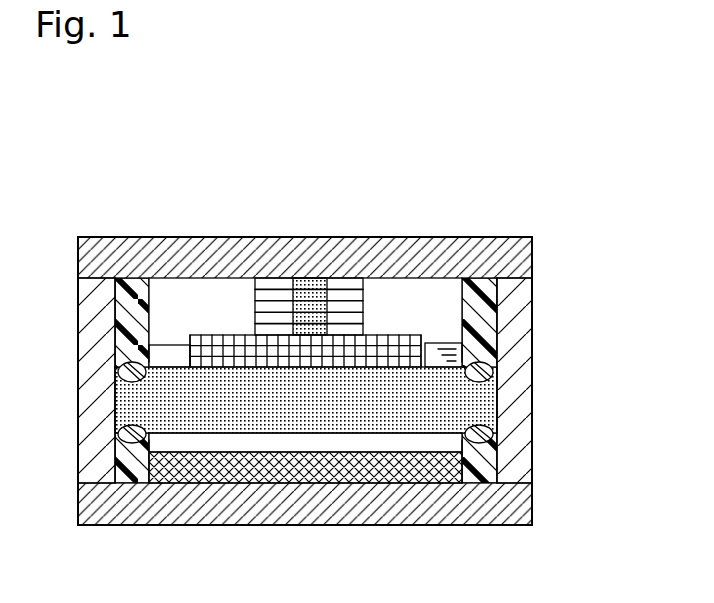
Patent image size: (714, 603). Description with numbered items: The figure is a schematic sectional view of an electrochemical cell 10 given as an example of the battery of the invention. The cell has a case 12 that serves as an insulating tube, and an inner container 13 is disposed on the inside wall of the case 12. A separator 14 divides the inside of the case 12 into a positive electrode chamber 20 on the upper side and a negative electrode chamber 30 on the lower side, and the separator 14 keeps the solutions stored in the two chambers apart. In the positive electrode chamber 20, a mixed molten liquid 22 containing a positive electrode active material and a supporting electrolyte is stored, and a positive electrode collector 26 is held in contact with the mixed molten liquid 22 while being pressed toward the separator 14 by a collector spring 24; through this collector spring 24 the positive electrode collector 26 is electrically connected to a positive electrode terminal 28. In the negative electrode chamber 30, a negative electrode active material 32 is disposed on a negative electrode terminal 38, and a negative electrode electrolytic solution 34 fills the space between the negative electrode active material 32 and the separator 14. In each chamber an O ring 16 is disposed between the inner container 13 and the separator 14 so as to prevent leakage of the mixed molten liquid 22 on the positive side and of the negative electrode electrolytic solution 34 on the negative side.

The electrochemical cell 10 is at (547, 122).
The case 12 is at (349, 376).
The inner container 13 is at (137, 310).
The separator 14 is at (457, 405).
The O ring 16 is at (480, 357).
The positive electrode chamber 20 is at (403, 267).
The mixed molten liquid 22 is at (430, 347).
The collector spring 24 is at (334, 292).
The positive electrode collector 26 is at (390, 338).
The positive electrode terminal 28 is at (179, 240).
The negative electrode chamber 30 is at (403, 509).
The negative electrode active material 32 is at (312, 468).
The negative electrode electrolytic solution 34 is at (412, 440).
The negative electrode terminal 38 is at (453, 505).